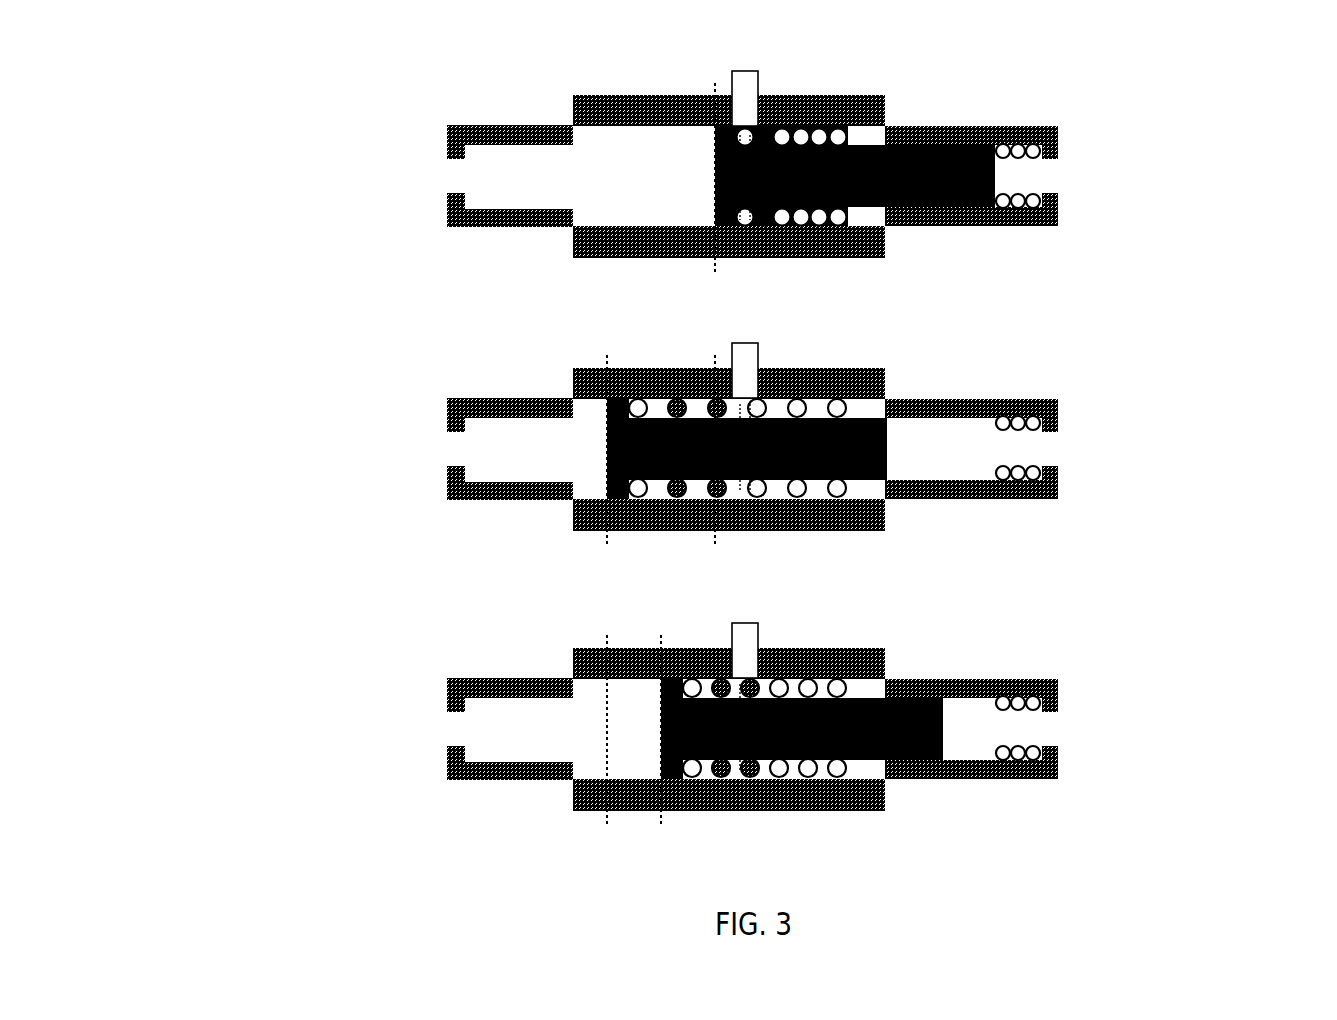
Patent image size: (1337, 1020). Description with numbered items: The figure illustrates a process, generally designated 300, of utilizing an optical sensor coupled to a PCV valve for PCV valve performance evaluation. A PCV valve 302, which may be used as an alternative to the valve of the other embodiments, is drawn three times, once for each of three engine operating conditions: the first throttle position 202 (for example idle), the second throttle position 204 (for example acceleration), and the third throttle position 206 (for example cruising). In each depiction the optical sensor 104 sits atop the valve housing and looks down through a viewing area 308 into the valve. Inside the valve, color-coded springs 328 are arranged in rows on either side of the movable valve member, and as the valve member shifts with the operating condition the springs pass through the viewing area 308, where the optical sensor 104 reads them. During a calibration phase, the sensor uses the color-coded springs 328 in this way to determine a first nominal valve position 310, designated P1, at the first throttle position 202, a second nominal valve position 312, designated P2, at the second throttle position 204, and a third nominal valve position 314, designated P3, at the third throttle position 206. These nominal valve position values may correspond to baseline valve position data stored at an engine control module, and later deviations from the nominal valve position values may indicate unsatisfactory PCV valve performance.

The process of utilizing an optical sensor coupled to a PCV valve 300 is at (1224, 63).
The PCV valve 302 is at (468, 5).
The optical sensor 104 is at (760, 68).
The color-coded springs 328 is at (774, 123).
The viewing area 308 is at (755, 199).
The first throttle position 202 is at (620, 138).
The second throttle position 204 is at (620, 437).
The third throttle position 206 is at (620, 717).
The first nominal valve position 310 is at (715, 344).
The second nominal valve position 312 is at (607, 620).
The third nominal valve position 314 is at (661, 760).